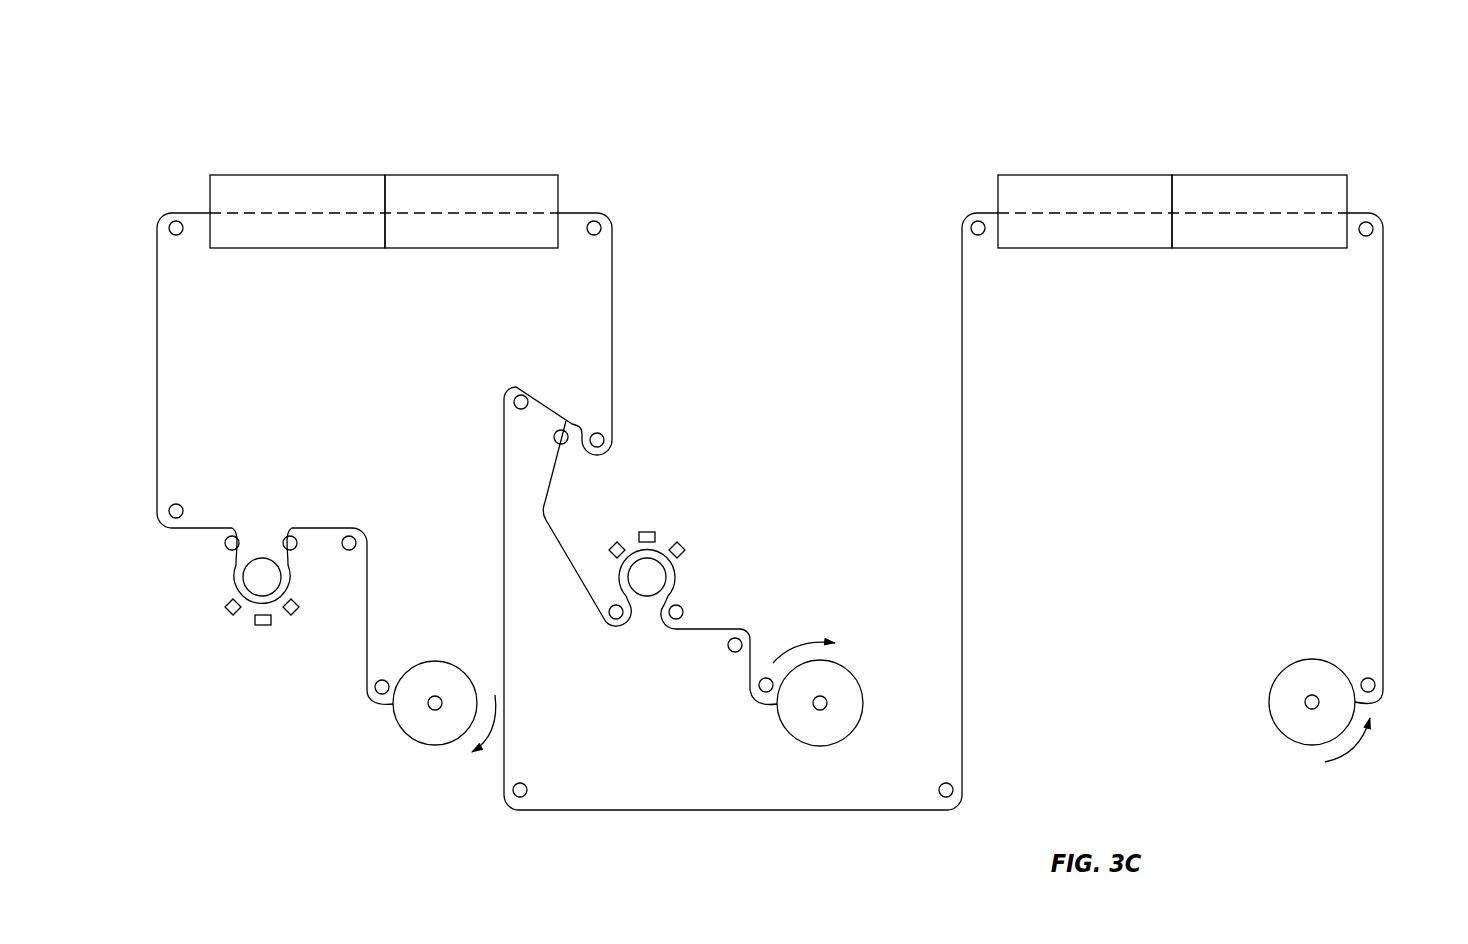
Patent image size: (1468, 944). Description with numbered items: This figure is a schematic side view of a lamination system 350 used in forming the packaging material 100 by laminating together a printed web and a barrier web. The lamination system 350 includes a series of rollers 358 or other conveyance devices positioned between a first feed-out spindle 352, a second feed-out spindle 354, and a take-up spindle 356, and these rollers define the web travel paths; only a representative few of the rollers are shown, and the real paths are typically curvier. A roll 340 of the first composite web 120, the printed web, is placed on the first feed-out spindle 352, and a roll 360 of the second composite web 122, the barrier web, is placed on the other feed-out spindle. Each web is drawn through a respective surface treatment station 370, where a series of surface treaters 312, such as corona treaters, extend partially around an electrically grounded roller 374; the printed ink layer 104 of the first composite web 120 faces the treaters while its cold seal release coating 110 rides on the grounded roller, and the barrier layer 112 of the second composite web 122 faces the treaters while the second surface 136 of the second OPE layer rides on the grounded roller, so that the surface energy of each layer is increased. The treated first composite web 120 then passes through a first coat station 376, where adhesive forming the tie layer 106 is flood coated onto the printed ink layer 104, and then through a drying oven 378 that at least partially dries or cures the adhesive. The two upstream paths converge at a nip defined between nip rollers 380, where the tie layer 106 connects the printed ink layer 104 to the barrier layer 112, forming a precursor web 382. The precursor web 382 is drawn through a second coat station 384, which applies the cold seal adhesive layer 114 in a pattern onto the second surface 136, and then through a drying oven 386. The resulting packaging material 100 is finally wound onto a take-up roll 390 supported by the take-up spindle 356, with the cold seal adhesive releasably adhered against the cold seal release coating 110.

The packaging material 100 is at (1378, 490).
The printed ink layer 104 is at (195, 205).
The tie layer 106 is at (632, 303).
The cold seal release coating 110 is at (378, 585).
The barrier layer 112 is at (748, 620).
The cold seal adhesive layer 114 is at (1395, 272).
The first composite web 120 is at (147, 347).
The second composite web 122 is at (873, 693).
The second surface 136 is at (570, 578).
The surface treaters 312 is at (291, 617).
The roll 340 is at (410, 744).
The lamination system 350 is at (818, 132).
The first feed-out spindle 352 is at (440, 710).
The second feed-out spindle 354 is at (822, 696).
The take-up spindle 356 is at (1308, 695).
The rollers 358 is at (180, 236).
The roll 360 is at (812, 746).
The surface treatment stations 370 is at (177, 612).
The electrically grounded roller 374 is at (262, 558).
The first coat station 376 is at (302, 175).
The drying oven 378 is at (470, 175).
The nip rollers 380 is at (597, 433).
The precursor web 382 is at (485, 470).
The second coat station 384 is at (1090, 175).
The drying oven 386 is at (1252, 175).
The take-up roll 390 is at (1290, 740).